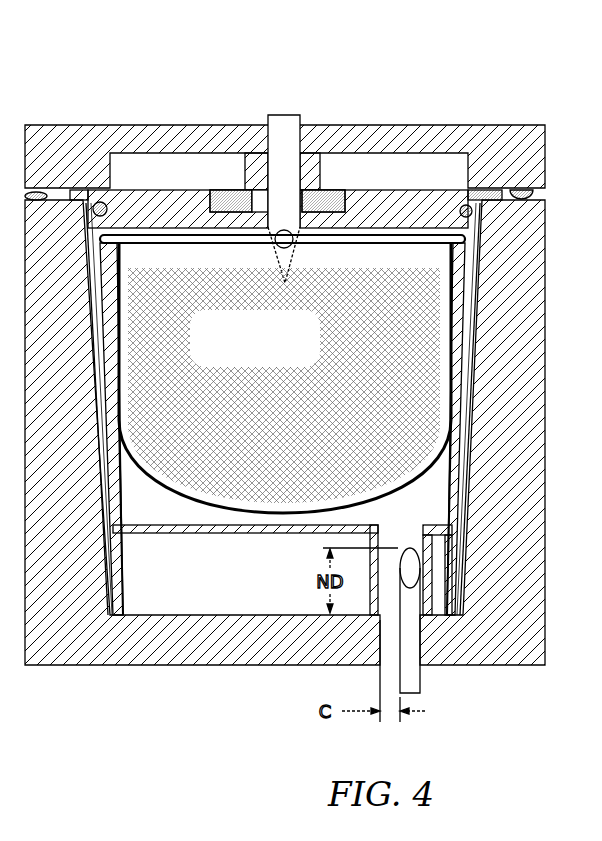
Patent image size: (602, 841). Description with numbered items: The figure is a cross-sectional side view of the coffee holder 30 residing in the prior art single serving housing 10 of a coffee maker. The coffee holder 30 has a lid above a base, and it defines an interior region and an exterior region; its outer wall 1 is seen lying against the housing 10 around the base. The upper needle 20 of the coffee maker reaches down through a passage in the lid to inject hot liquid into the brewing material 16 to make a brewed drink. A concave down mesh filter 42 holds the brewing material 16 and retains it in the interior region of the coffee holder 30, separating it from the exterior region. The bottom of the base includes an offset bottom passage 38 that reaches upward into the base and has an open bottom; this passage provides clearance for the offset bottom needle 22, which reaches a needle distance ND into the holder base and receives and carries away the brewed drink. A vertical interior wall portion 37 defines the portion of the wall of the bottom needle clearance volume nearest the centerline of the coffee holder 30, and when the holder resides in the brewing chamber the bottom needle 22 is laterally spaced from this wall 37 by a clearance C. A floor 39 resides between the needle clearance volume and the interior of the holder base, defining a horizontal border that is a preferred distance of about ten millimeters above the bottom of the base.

The sleeve 1 is at (462, 552).
The single serving housing 10 is at (490, 150).
The brewing material 16 is at (255, 349).
The upper needle 20 is at (288, 115).
The bottom needle 22 is at (423, 686).
The coffee holder 30 is at (163, 208).
The vertical interior wall portion 37 is at (382, 538).
The offset bottom passage 38 is at (263, 585).
The floor 39 is at (197, 525).
The mesh filter 42 is at (455, 412).